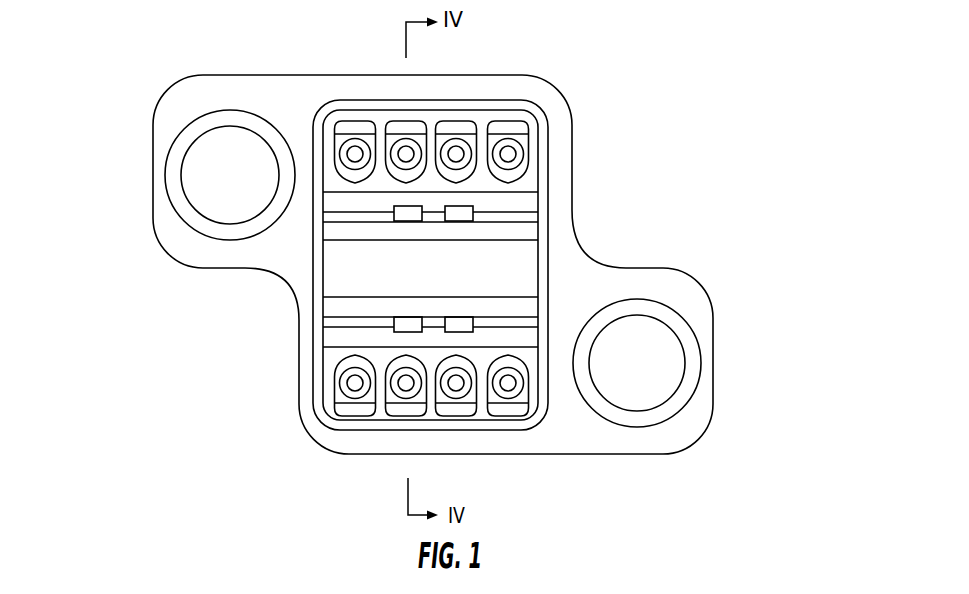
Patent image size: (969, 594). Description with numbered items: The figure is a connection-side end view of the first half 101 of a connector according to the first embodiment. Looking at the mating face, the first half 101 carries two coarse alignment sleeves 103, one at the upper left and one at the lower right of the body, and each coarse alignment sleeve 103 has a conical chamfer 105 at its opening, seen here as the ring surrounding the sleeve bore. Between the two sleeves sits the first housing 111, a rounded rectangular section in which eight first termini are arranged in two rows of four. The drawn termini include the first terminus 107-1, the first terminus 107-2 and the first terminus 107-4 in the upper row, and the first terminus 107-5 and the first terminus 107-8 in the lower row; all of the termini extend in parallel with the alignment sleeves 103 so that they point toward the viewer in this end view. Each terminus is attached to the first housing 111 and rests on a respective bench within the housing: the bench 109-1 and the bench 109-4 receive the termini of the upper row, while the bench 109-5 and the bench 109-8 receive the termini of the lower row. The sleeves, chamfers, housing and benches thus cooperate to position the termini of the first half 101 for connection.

The first half 101 is at (774, 149).
The coarse alignment sleeve 103 is at (205, 173).
The conical chamfer 105 is at (183, 212).
The first terminus 107-1 is at (359, 142).
The first terminus 107-2 is at (407, 142).
The first terminus 107-4 is at (508, 137).
The first terminus 107-5 is at (345, 386).
The first terminus 107-8 is at (525, 383).
The bench 109-1 is at (322, 172).
The bench 109-4 is at (494, 181).
The bench 109-5 is at (356, 353).
The bench 109-8 is at (511, 353).
The first housing 111 is at (318, 268).